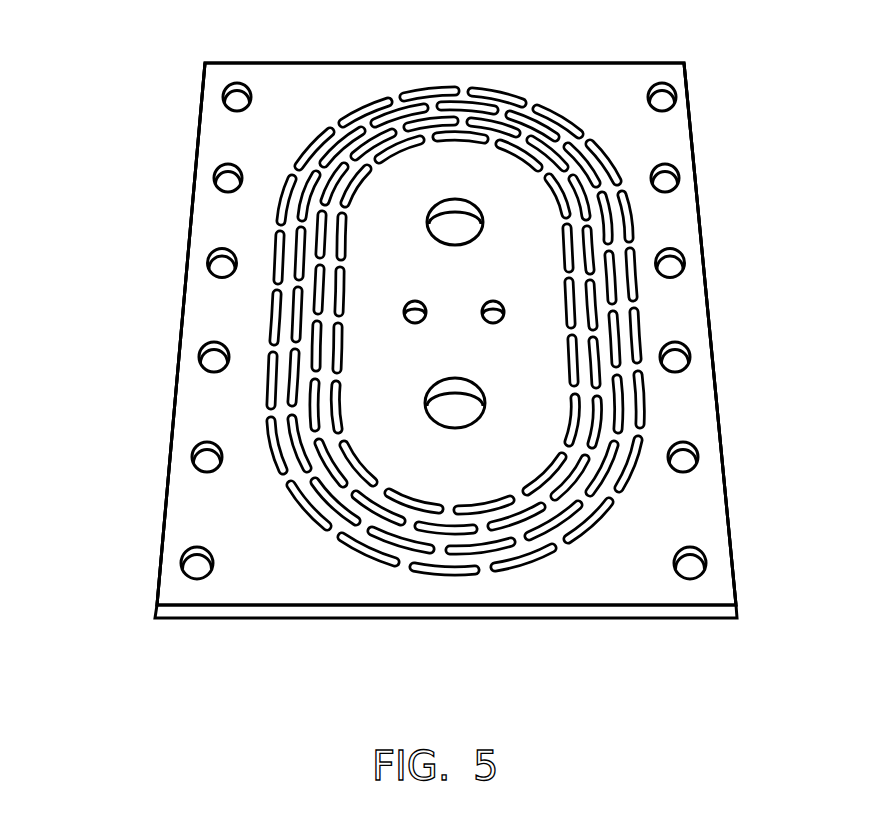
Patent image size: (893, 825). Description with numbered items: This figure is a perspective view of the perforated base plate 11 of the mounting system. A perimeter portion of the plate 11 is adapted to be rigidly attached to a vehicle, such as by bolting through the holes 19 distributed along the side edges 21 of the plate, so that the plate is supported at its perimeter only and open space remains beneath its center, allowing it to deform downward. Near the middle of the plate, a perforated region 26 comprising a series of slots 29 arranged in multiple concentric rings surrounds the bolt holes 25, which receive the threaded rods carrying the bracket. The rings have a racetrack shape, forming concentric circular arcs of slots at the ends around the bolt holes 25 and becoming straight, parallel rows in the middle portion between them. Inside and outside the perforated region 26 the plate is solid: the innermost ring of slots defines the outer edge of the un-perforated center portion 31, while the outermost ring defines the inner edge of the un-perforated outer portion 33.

The perforated base plate 11 is at (115, 141).
The holes 19 is at (215, 180).
The side edges 21 is at (700, 213).
The bolt holes 25 is at (455, 378).
The perforated region 26 is at (212, 308).
The slots 29 is at (378, 558).
The un-perforated center portion 31 is at (540, 343).
The un-perforated outer portion 33 is at (225, 518).